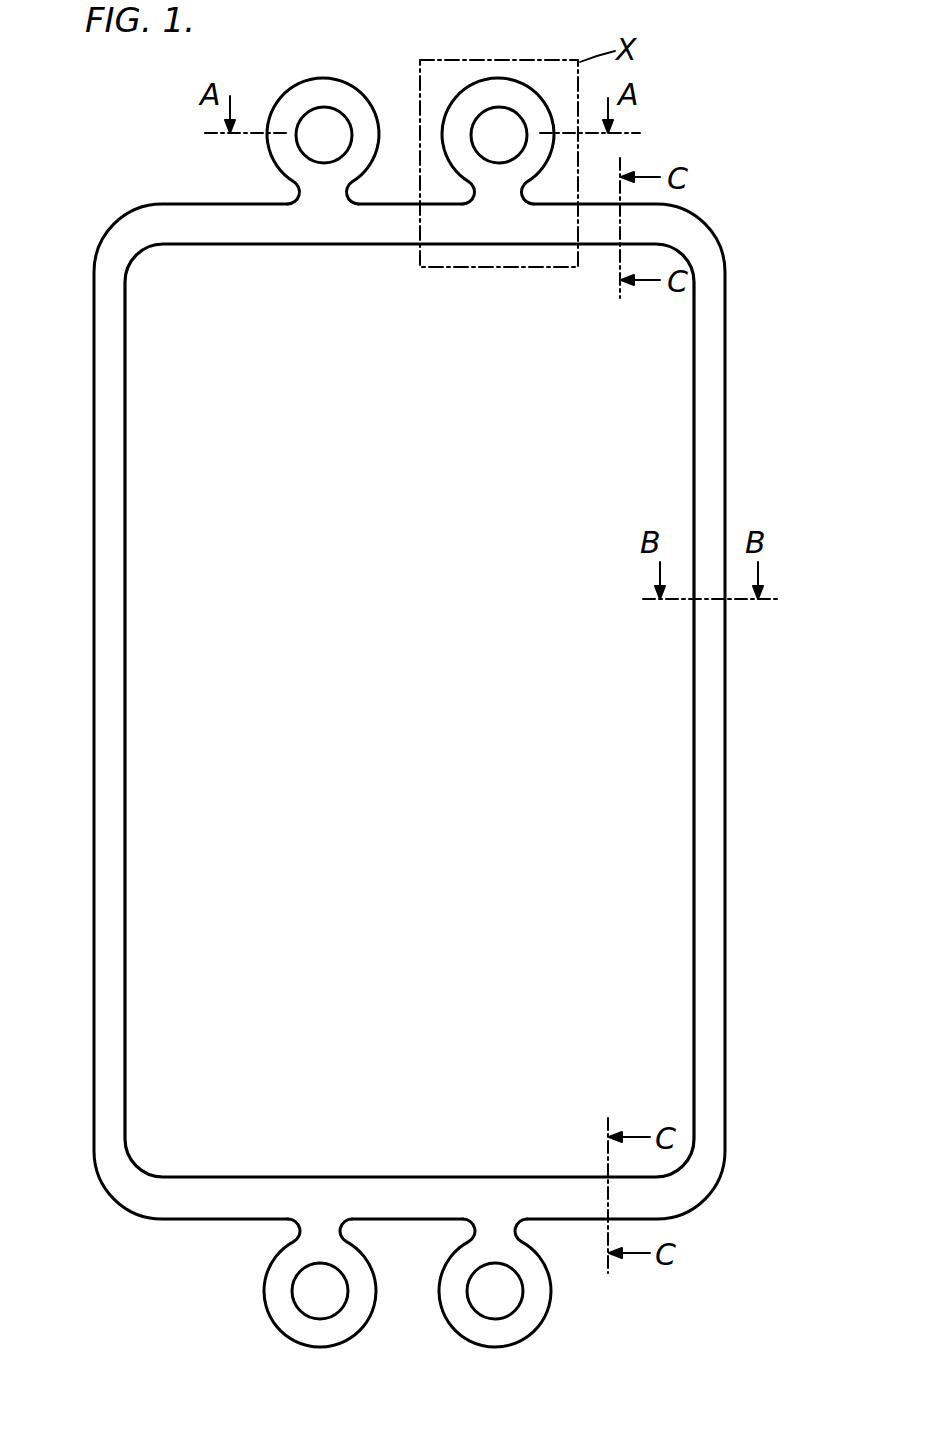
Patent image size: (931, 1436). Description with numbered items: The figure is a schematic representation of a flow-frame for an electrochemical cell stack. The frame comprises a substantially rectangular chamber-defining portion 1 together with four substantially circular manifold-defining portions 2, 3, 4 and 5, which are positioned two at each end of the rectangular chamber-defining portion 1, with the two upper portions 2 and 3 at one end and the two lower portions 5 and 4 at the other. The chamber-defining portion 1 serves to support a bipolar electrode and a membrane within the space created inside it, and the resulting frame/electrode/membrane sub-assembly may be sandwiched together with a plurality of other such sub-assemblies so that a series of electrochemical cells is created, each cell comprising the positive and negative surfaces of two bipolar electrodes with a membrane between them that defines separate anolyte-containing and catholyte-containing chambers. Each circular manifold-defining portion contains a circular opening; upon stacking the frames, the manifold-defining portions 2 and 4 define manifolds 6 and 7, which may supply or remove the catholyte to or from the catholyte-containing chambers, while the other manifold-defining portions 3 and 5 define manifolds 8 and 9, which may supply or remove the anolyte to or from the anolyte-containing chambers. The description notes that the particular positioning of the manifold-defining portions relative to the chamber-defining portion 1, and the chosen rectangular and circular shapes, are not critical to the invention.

The chamber-defining portion 1 is at (712, 740).
The manifold-defining portion 2 is at (309, 87).
The manifold-defining portion 3 is at (460, 106).
The manifold-defining portion 4 is at (520, 1323).
The manifold-defining portion 5 is at (278, 1317).
The manifold 6 is at (308, 138).
The manifold 7 is at (512, 1293).
The manifold 8 is at (488, 140).
The manifold 9 is at (302, 1290).